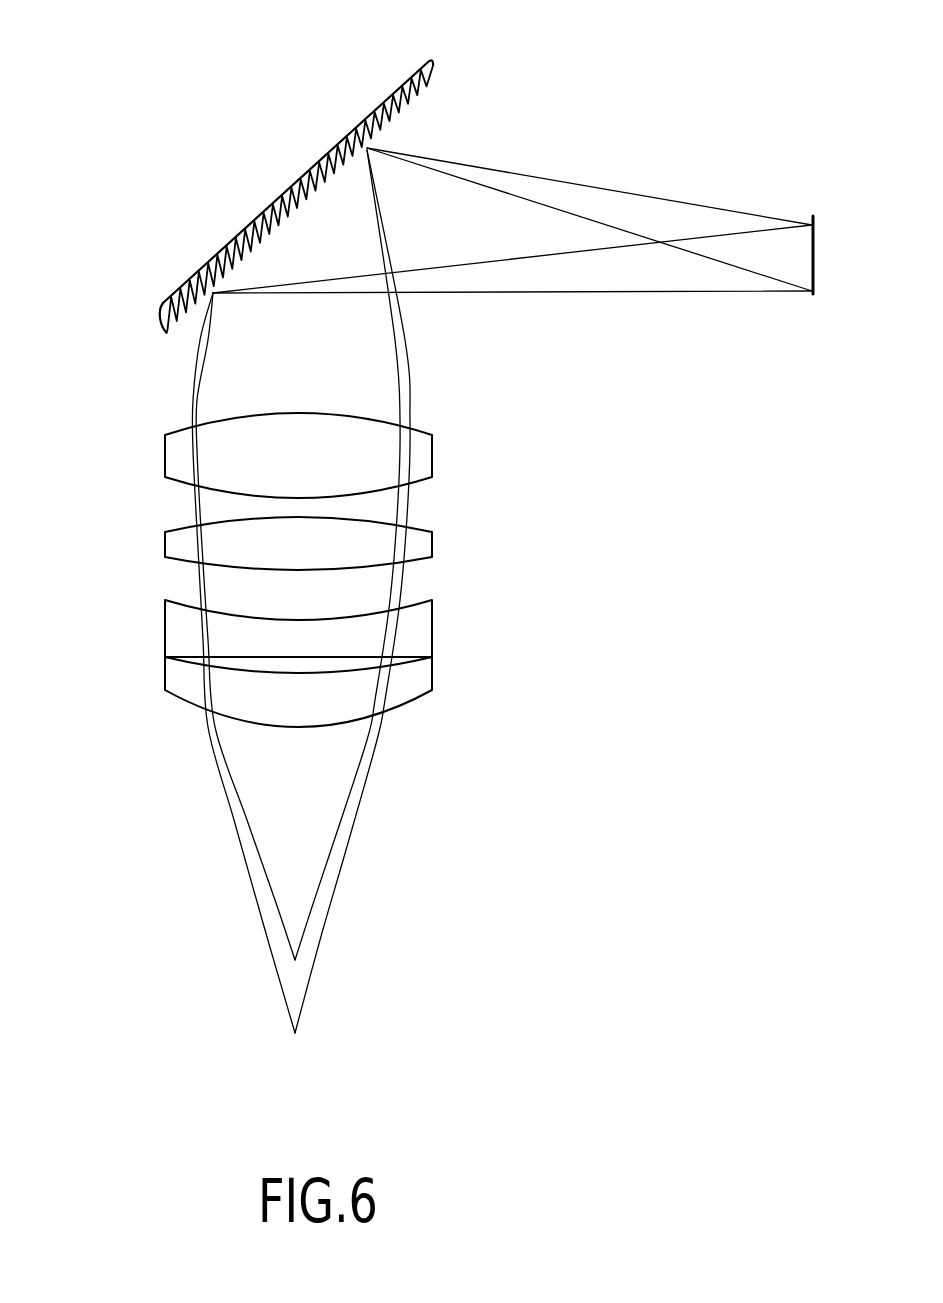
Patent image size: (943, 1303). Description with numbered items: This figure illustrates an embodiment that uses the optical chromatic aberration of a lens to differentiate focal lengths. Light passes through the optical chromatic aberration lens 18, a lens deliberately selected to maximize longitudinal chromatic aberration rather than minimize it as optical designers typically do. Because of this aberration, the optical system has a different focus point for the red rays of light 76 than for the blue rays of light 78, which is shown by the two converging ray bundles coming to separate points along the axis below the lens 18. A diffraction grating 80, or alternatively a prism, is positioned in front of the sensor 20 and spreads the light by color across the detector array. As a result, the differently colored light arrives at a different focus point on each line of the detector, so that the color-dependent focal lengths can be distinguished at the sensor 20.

The diffraction grating 80 is at (288, 168).
The optical chromatic aberration lens 18 is at (115, 400).
The blue rays of light 78 is at (302, 969).
The red rays of light 76 is at (302, 1033).
The sensor 20 is at (800, 250).